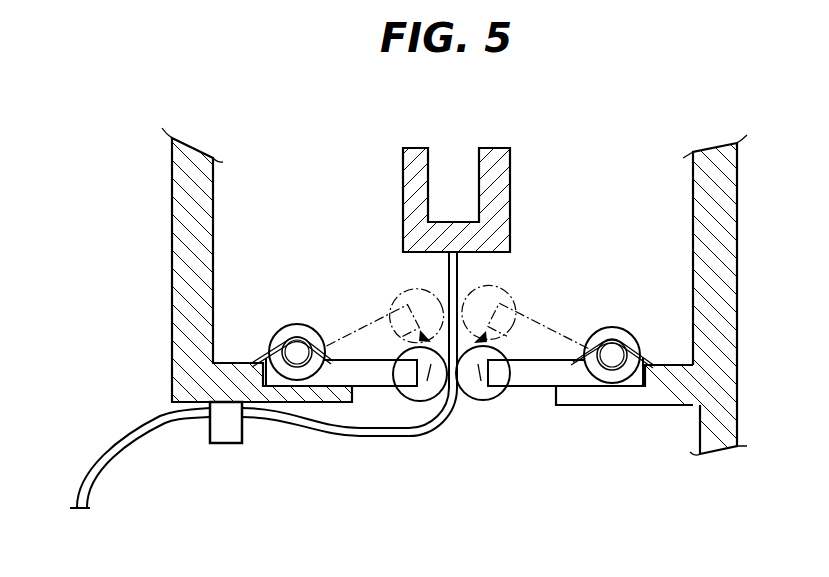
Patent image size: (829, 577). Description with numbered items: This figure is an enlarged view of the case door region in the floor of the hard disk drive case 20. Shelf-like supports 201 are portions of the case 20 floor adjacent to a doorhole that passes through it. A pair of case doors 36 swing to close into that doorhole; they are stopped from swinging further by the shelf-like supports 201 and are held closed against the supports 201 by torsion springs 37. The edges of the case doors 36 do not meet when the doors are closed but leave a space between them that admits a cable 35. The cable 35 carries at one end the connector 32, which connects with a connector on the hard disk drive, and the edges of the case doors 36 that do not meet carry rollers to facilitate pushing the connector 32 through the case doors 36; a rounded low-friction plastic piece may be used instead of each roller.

The hard disk drive case 20 is at (172, 236).
The connector 32 is at (448, 162).
The cable 35 is at (457, 275).
The case doors 36 is at (380, 354).
The torsion springs 37 is at (614, 328).
The supports 201 is at (593, 398).